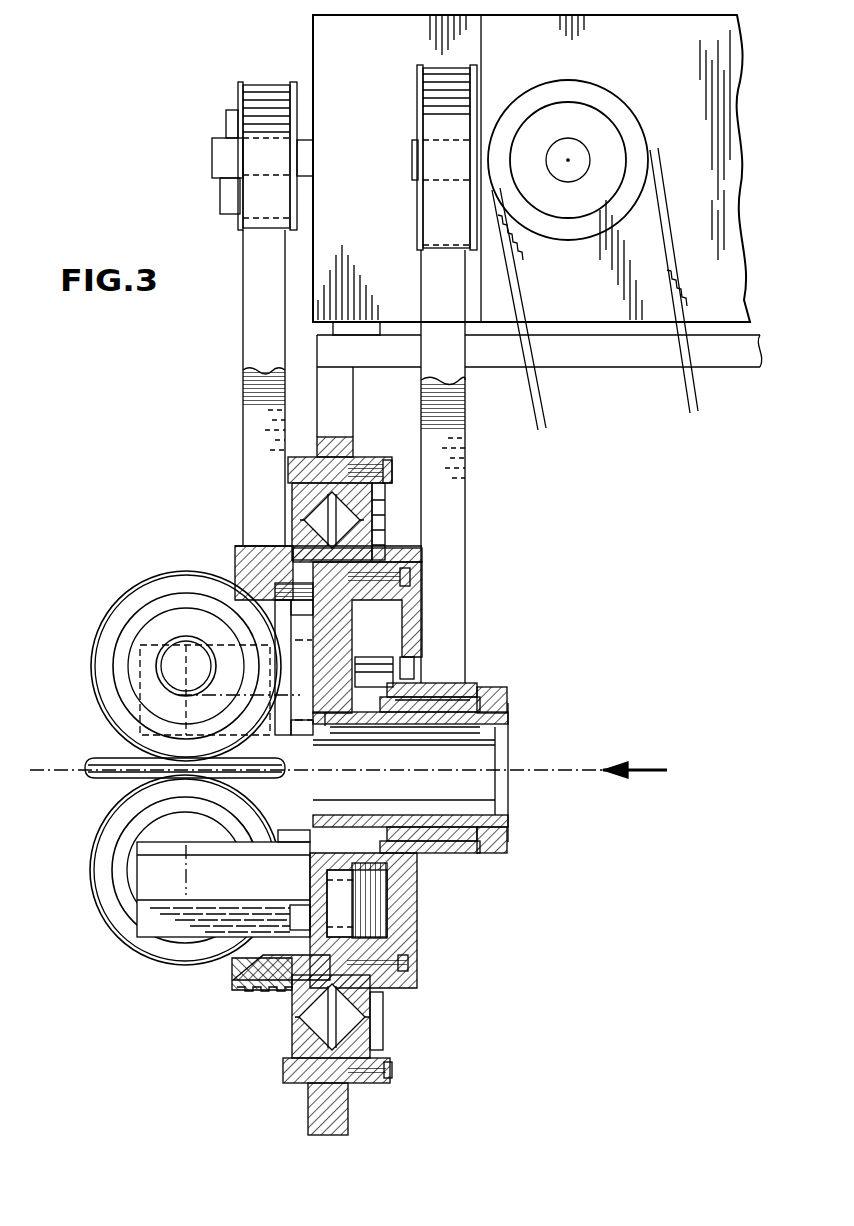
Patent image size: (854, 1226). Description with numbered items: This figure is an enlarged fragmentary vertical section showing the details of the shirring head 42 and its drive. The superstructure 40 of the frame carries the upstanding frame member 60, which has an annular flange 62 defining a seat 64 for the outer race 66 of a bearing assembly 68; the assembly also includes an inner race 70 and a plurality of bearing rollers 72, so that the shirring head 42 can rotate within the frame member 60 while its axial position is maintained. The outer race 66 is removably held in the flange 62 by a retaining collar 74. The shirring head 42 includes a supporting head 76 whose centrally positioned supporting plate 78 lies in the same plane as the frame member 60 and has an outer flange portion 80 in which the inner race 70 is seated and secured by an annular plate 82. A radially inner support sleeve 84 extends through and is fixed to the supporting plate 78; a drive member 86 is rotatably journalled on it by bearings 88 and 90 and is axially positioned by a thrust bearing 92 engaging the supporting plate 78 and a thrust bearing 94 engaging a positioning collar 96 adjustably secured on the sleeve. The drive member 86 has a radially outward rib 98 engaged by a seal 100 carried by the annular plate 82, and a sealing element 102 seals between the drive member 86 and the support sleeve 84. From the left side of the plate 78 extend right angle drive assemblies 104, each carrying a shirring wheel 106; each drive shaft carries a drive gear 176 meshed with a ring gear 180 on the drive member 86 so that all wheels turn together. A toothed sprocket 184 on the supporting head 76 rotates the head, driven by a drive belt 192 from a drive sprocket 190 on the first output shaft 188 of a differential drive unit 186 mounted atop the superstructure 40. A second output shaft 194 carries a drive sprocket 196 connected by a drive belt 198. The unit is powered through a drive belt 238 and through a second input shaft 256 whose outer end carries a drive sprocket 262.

The superstructure 40 is at (735, 372).
The shirring head 42 is at (217, 541).
The upstanding frame member 60 is at (340, 405).
The annular flange 62 is at (283, 1068).
The seat 64 is at (306, 1088).
The outer race 66 is at (292, 1035).
The bearing assembly 68 is at (288, 1012).
The inner race 70 is at (384, 1010).
The bearing rollers 72 is at (355, 1022).
The retaining collar 74 is at (392, 1072).
The supporting head 76 is at (262, 558).
The supporting plate 78 is at (342, 606).
The outer flange portion 80 is at (262, 612).
The annular plate 82 is at (417, 905).
The support sleeve 84 is at (465, 755).
The drive member 86 is at (450, 690).
The bearing 88 is at (386, 728).
The bearing 90 is at (435, 728).
The thrust bearing 92 is at (352, 726).
The thrust bearing 94 is at (508, 730).
The positioning collar 96 is at (492, 692).
The rib 98 is at (417, 690).
The seal 100 is at (410, 656).
The sealing element 102 is at (465, 697).
The right angle drive assembly 104 is at (162, 930).
The shirring wheel 106 is at (137, 609).
The drive gear 176 is at (380, 925).
The ring gear 180 is at (395, 885).
The toothed sprocket 184 is at (242, 986).
The differential drive unit 186 is at (310, 42).
The first output shaft 188 is at (212, 167).
The drive sprocket 190 is at (238, 90).
The drive belt 192 is at (243, 455).
The second output shaft 194 is at (413, 178).
The drive sprocket 196 is at (417, 95).
The drive belt 198 is at (465, 500).
The drive belt 238 is at (680, 252).
The second input shaft 256 is at (578, 158).
The drive sprocket 262 is at (632, 128).